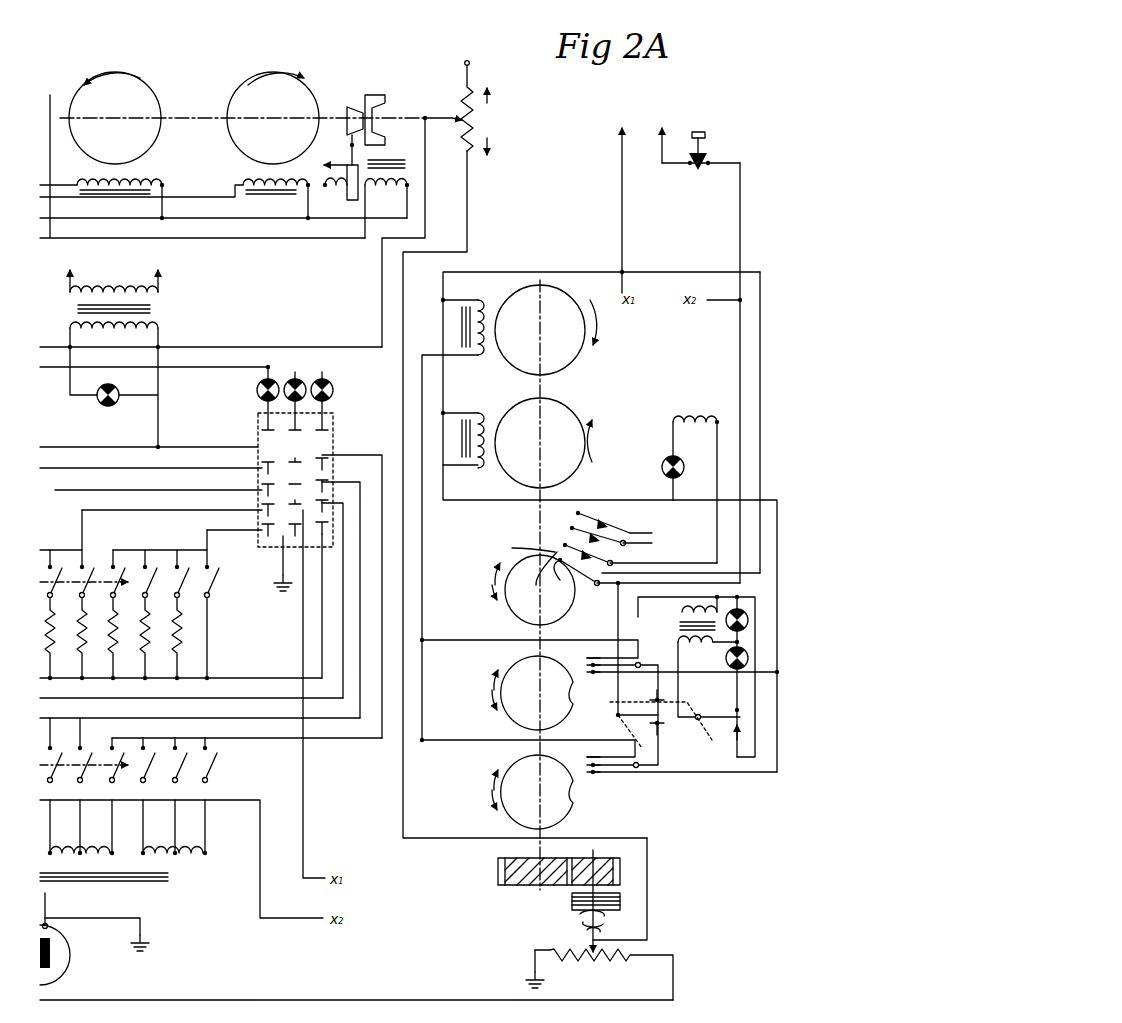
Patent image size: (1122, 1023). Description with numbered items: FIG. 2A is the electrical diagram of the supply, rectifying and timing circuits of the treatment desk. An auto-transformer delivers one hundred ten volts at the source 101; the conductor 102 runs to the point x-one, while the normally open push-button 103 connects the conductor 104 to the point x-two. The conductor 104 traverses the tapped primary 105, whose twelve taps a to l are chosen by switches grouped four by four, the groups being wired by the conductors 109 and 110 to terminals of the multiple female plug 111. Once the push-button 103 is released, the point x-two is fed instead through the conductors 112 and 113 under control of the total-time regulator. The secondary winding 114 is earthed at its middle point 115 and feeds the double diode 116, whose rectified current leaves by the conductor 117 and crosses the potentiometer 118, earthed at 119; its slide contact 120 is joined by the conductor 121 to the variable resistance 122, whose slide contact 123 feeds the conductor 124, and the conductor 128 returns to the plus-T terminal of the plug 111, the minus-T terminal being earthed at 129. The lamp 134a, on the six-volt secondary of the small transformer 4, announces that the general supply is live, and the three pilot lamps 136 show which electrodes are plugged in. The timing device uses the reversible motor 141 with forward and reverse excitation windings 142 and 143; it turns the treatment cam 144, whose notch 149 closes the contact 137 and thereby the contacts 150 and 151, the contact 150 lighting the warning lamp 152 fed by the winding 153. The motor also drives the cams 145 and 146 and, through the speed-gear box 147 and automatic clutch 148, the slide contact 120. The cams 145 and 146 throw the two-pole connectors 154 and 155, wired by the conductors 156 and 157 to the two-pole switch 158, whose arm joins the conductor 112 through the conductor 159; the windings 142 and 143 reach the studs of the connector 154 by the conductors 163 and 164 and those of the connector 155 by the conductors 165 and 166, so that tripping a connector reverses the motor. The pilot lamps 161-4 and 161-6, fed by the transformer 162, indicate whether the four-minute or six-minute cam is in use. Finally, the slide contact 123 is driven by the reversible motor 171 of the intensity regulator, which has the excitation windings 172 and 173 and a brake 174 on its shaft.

The transformer 4 is at (70, 309).
The source 101 is at (685, 133).
The conductor 102 is at (618, 222).
The push-button 103 is at (708, 150).
The conductor 104 is at (736, 222).
The tapped primary 105 is at (203, 865).
The conductor 109 is at (131, 717).
The conductor 110 is at (257, 737).
The female plug 111 is at (337, 440).
The conductor 112 is at (738, 378).
The conductor 113 is at (778, 368).
The secondary winding 114 is at (46, 893).
The earth connection 115 is at (138, 937).
The double diode 116 is at (72, 955).
The conductor 117 is at (166, 1000).
The potentiometer 118 is at (604, 974).
The earth connection 119 is at (533, 970).
The slide contact 120 is at (590, 950).
The conductor 121 is at (588, 840).
The variable resistance 122 is at (478, 130).
The slide contact 123 is at (460, 128).
The conductor 124 is at (421, 182).
The conductor 128 is at (275, 676).
The earth connection 129 is at (280, 578).
The lamp 134a is at (98, 402).
The pilot lamps 136 is at (255, 391).
The contact 137 is at (527, 542).
The reversible action motor 141 is at (518, 294).
The excitation winding 142 is at (460, 328).
The excitation winding 143 is at (460, 440).
The treatment cam 144 is at (520, 615).
The four-minute cam 145 is at (525, 661).
The six-minute cam 146 is at (522, 762).
The speed-gear box 147 is at (515, 870).
The clutching and declutching device 148 is at (571, 900).
The notch 149 is at (550, 574).
The contact 150 is at (576, 516).
The contact 151 is at (610, 516).
The warning lamp 152 is at (661, 466).
The winding 153 is at (704, 418).
The two-pole connector 154 is at (601, 676).
The two-pole connector 155 is at (603, 768).
The conductor 156 is at (658, 688).
The conductor 157 is at (652, 760).
The two-pole switch 158 is at (652, 728).
The conductor 159 is at (618, 627).
The pilot lamp 161-4 is at (748, 658).
The pilot lamp 161-6 is at (748, 620).
The transformer 162 is at (655, 628).
The conductor 163 is at (425, 528).
The conductor 164 is at (492, 500).
The conductor 165 is at (466, 740).
The conductor 166 is at (728, 772).
The reversible motor 171 is at (141, 90).
The excitation winding 172 is at (135, 172).
The excitation winding 173 is at (250, 172).
The contact plates 174 is at (358, 106).